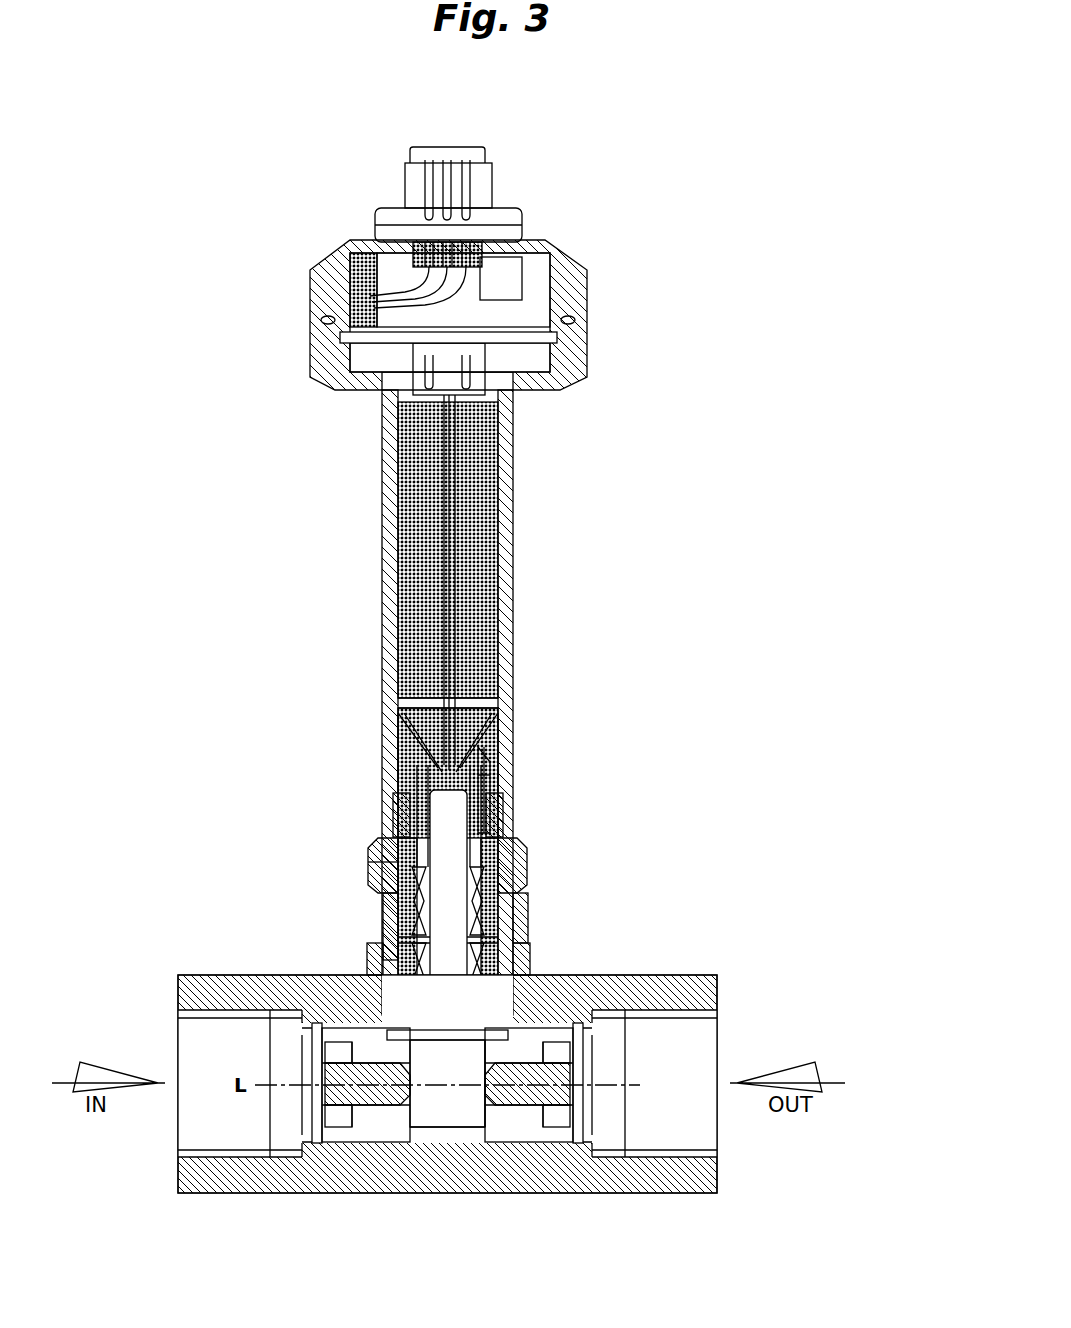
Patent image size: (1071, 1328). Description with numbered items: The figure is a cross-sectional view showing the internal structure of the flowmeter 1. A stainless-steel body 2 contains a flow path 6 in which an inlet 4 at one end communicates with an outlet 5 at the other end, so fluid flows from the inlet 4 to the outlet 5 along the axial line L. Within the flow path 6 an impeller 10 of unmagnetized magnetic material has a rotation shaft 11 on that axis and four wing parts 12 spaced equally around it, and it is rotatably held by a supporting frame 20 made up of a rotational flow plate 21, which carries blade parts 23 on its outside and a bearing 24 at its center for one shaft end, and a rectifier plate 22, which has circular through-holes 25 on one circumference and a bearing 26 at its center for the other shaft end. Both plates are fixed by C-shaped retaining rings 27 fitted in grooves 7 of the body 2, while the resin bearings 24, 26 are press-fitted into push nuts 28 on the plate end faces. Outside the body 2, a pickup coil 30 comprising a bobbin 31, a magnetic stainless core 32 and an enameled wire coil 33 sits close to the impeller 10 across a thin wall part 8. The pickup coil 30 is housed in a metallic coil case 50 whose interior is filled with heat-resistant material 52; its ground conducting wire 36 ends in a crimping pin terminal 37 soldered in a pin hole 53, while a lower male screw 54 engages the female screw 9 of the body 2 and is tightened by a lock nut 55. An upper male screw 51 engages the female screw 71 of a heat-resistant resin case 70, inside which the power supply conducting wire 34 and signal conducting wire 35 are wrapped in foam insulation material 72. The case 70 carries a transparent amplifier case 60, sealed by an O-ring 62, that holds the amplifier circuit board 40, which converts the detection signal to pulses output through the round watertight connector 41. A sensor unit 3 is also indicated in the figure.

The flowmeter 1 is at (692, 95).
The body 2 is at (700, 975).
The sensor unit 3 is at (562, 560).
The inlet 4 is at (190, 1028).
The outlet 5 is at (700, 1030).
The flow path 6 is at (415, 1127).
The groove 7 is at (305, 1150).
The thin wall part 8 is at (432, 1120).
The female screw 9 is at (380, 945).
The impeller 10 is at (447, 1120).
The rotation shaft 11 is at (520, 1140).
The wing part 12 is at (478, 1120).
The supporting frame 20 is at (330, 1065).
The rotational flow plate 21 is at (350, 1140).
The rectifier plate 22 is at (565, 1142).
The blade part 23 is at (318, 1142).
The bearing 24 is at (360, 1085).
The through-hole 25 is at (560, 1063).
The bearing 26 is at (528, 1045).
The retaining ring 27 is at (305, 1118).
The push nut 28 is at (312, 1075).
The pickup coil 30 is at (385, 792).
The bobbin 31 is at (510, 838).
The core 32 is at (503, 713).
The coil 33 is at (500, 875).
The power supply conducting wire 34 is at (405, 742).
The signal conducting wire 35 is at (400, 713).
The ground conducting wire 36 is at (505, 752).
The crimping pin terminal 37 is at (503, 800).
The amplifier circuit board 40 is at (340, 335).
The round watertight connector 41 is at (466, 143).
The coil case 50 is at (375, 840).
The male screw 51 is at (383, 822).
The heat-resistant material 52 is at (370, 860).
The pin hole 53 is at (505, 830).
The male screw 54 is at (383, 900).
The lock nut 55 is at (520, 940).
The amplifier case 60 is at (335, 252).
The O-ring 62 is at (590, 322).
The case 70 is at (383, 570).
The female screw 71 is at (385, 800).
The insulation material 72 is at (410, 608).